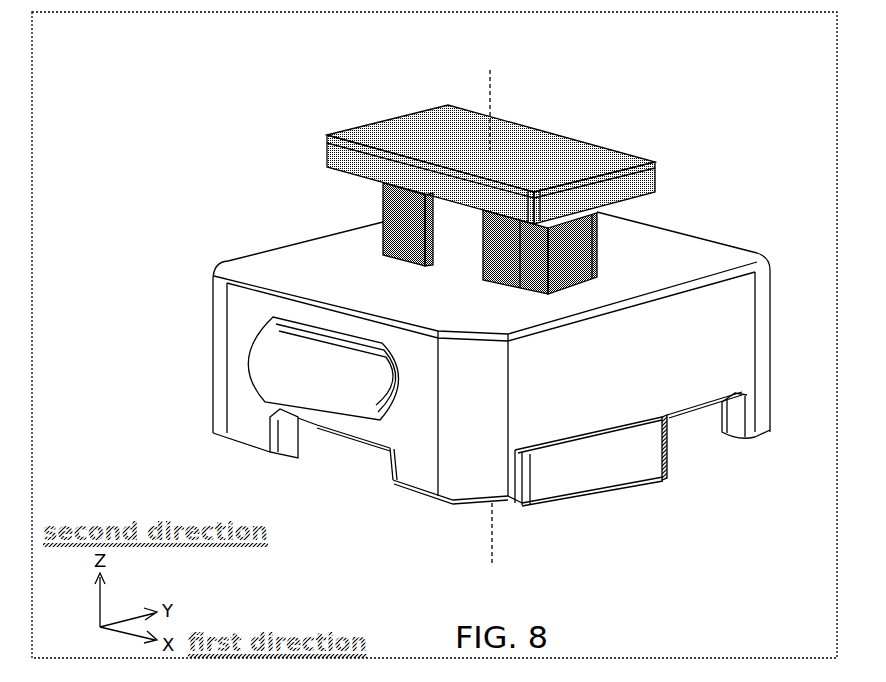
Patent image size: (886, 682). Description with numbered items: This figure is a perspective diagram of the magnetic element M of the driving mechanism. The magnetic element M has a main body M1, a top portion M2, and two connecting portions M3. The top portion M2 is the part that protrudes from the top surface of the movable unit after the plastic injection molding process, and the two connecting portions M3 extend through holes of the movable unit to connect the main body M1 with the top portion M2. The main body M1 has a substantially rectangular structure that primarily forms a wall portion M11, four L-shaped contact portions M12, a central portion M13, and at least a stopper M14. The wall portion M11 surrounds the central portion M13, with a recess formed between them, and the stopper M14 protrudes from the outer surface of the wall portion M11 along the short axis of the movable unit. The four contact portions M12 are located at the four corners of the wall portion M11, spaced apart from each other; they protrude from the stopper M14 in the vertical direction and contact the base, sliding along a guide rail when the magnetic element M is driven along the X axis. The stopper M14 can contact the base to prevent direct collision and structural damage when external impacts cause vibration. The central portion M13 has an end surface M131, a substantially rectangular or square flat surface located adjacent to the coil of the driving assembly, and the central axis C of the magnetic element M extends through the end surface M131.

The magnetic element M is at (439, 289).
The main body M1 is at (440, 381).
The top portion M2 is at (547, 148).
The connecting portions M3 is at (500, 258).
The wall portion M11 is at (425, 435).
The contact portions M12 is at (262, 452).
The central portion M13 is at (629, 473).
The end surface M131 is at (595, 497).
The stopper M14 is at (262, 357).
The central axis C is at (495, 545).